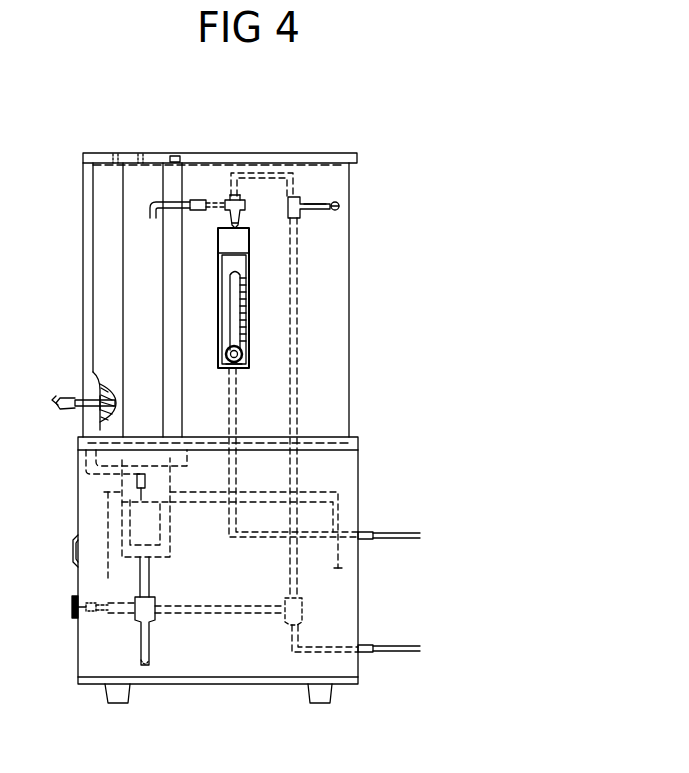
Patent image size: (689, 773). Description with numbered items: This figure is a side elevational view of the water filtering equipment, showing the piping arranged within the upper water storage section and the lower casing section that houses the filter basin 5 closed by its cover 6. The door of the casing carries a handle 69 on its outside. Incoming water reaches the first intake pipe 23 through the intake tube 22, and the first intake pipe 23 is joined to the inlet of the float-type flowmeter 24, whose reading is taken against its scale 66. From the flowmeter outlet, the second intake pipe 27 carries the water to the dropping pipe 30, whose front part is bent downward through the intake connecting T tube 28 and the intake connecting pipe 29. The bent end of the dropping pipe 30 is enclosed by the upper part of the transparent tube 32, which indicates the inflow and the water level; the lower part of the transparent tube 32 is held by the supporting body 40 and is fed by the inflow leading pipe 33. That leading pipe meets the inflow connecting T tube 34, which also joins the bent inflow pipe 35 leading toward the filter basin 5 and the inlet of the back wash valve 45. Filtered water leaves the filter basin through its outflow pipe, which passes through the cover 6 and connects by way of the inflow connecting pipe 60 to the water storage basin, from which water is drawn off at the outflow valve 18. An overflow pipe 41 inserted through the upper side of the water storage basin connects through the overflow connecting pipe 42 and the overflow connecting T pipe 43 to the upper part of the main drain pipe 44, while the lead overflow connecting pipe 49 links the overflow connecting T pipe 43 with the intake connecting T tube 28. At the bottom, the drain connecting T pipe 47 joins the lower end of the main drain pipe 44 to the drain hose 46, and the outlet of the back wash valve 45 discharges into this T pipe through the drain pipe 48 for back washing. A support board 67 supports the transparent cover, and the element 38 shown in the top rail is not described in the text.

The filter basin 5 is at (107, 515).
The cover 6 is at (340, 492).
The outflow valve 18 is at (58, 394).
The intake tube 22 is at (394, 540).
The first intake pipe 23 is at (238, 420).
The float-type flowmeter 24 is at (248, 369).
The second intake pipe 27 is at (229, 219).
The intake connecting T tube 28 is at (245, 213).
The intake connecting pipe 29 is at (198, 200).
The dropping pipe 30 is at (150, 220).
The transparent tube 32 is at (154, 336).
The inflow leading pipe 33 is at (151, 578).
The inflow connecting T tube 34 is at (153, 620).
The bent inflow pipe 35 is at (151, 656).
The heater element 38 is at (148, 160).
The supporting body 40 is at (171, 531).
The overflow pipe 41 is at (340, 206).
The overflow connecting pipe 42 is at (315, 211).
The overflow connecting T pipe 43 is at (300, 205).
The main drain pipe 44 is at (299, 420).
The back wash valve 45 is at (70, 613).
The drain hose 46 is at (392, 653).
The drain connecting T pipe 47 is at (303, 612).
The drain pipe for back washing 48 is at (226, 614).
The lead overflow connecting pipe 49 is at (262, 170).
The inflow connecting pipe 60 is at (100, 471).
The scale 66 is at (249, 318).
The support board 67 is at (183, 458).
The handle 69 is at (72, 553).